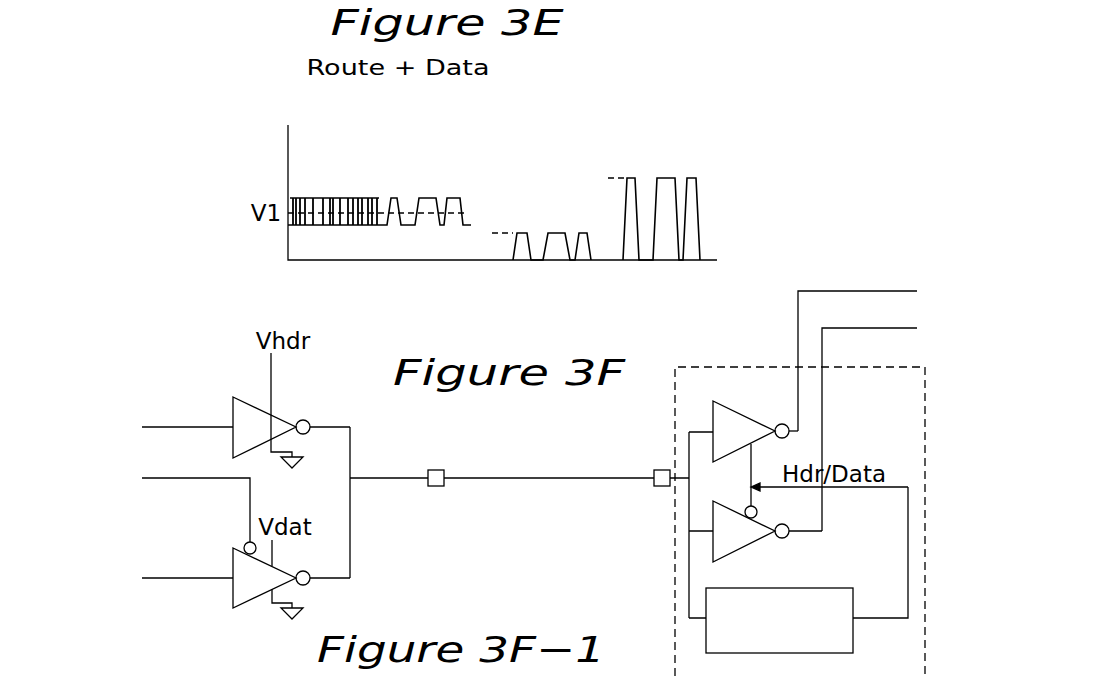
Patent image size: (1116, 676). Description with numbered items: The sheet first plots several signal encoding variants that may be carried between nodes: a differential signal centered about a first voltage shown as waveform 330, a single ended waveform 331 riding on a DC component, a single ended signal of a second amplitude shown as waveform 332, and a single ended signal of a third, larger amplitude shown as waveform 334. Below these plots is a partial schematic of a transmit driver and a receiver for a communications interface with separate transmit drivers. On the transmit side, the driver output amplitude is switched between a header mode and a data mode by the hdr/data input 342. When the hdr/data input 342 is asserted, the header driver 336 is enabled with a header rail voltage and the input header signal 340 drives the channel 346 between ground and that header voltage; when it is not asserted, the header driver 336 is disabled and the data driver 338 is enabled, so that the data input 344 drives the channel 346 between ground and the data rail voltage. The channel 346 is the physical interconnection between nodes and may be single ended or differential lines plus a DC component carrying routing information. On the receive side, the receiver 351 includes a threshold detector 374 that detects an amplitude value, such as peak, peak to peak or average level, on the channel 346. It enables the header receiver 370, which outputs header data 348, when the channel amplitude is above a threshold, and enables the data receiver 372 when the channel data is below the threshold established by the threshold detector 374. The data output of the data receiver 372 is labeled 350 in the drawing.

In FIG. 3E, the waveform 330 is at (383, 196).
In FIG. 3E, the single ended waveform 331 is at (481, 196).
In FIG. 3E, the waveform 332 is at (598, 229).
In FIG. 3E, the waveform 334 is at (708, 172).
In FIG. 3F, the header driver 336 is at (248, 397).
In FIG. 3F, the data driver 338 is at (243, 607).
In FIG. 3F, the input header signal 340 is at (140, 419).
In FIG. 3F, the hdr/data input 342 is at (133, 504).
In FIG. 3F, the data input 344 is at (155, 564).
In FIG. 3F, the channel 346 is at (558, 478).
In FIG. 3F, the header data 348 is at (860, 336).
In FIG. 3F, the data output 350 is at (869, 416).
In FIG. 3F, the receiver 351 is at (800, 506).
In FIG. 3F, the header receiver 370 is at (757, 420).
In FIG. 3F, the data receiver 372 is at (740, 549).
In FIG. 3F, the threshold detector 374 is at (781, 607).